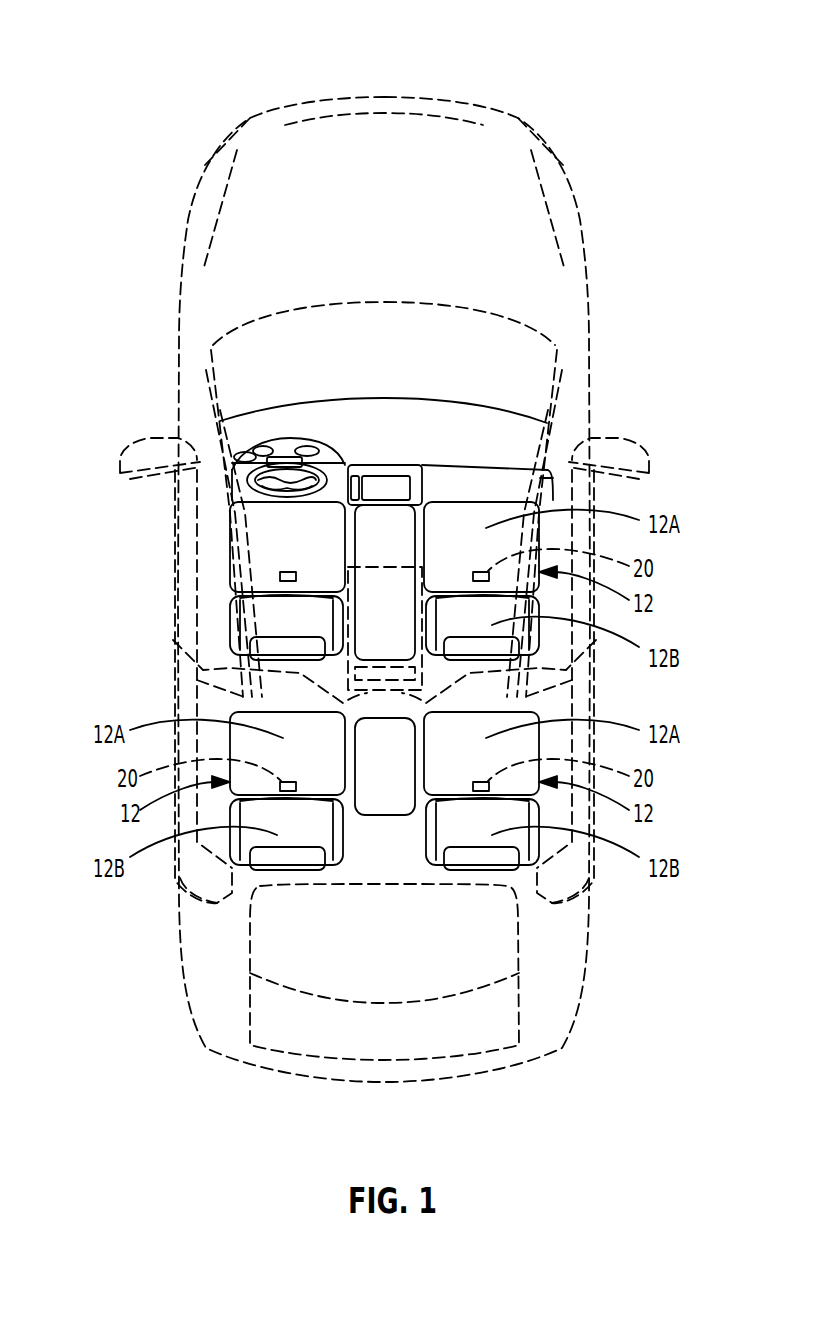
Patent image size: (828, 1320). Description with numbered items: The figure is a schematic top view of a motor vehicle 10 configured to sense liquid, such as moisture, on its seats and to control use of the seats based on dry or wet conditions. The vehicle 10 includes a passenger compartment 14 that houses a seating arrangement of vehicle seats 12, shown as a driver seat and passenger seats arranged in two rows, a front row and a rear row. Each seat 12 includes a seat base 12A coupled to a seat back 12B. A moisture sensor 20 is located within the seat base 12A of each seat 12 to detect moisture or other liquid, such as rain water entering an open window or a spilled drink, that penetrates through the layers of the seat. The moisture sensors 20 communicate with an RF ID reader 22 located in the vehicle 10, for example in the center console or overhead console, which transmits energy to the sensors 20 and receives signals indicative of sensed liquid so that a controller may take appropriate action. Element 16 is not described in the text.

The motor vehicle 10 is at (140, 72).
The vehicle seat 12 is at (219, 587).
The seat base 12A is at (283, 528).
The seat back 12B is at (277, 625).
The passenger compartment 14 is at (440, 428).
The rear seat / cabin floor 16 is at (230, 668).
The moisture sensor 20 is at (281, 571).
The RF ID reader 22 is at (523, 700).